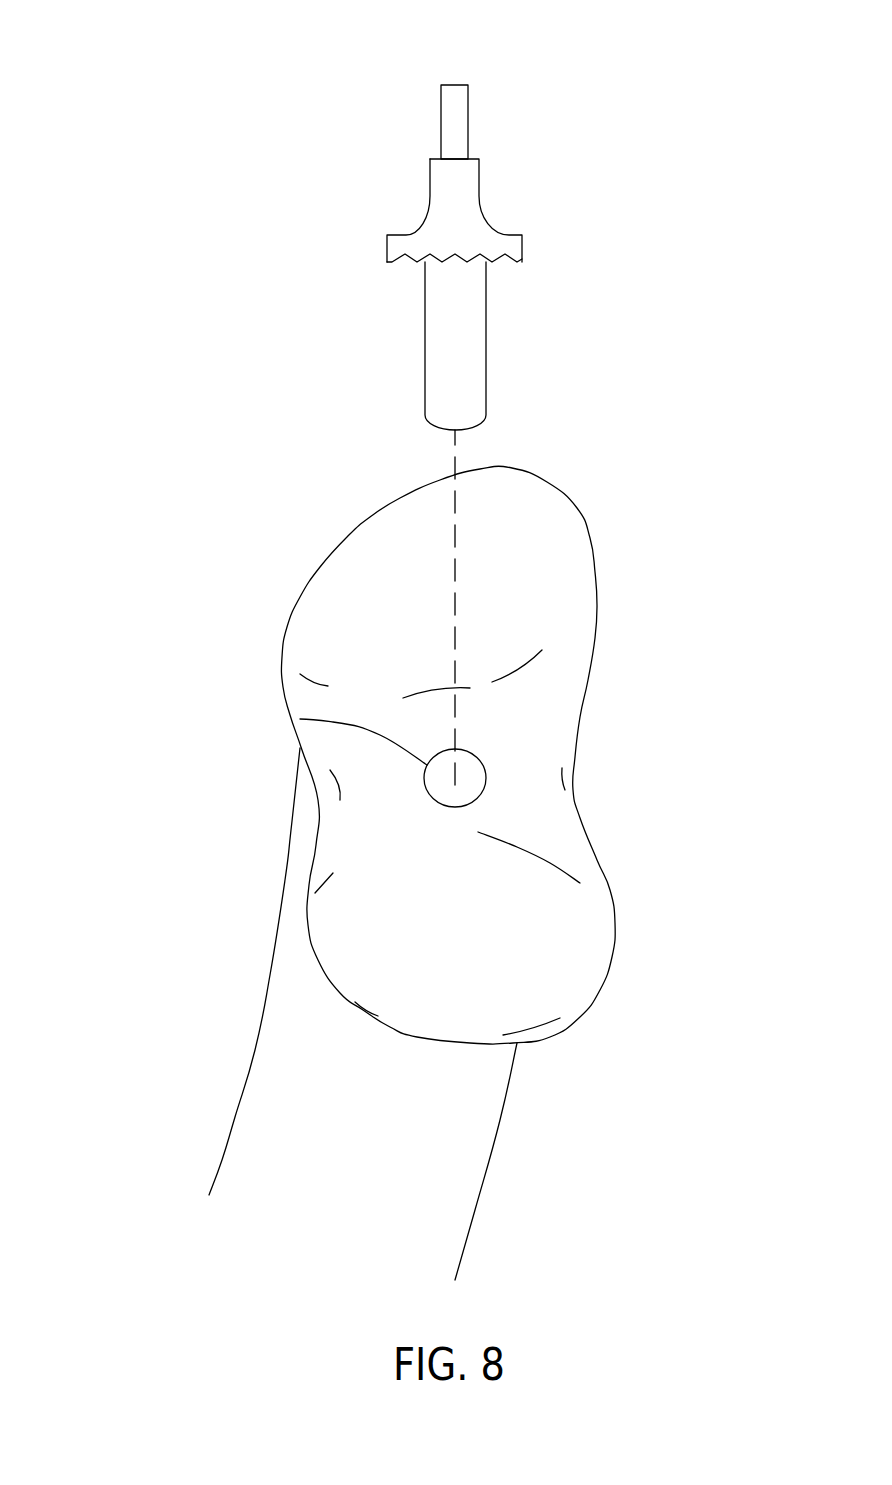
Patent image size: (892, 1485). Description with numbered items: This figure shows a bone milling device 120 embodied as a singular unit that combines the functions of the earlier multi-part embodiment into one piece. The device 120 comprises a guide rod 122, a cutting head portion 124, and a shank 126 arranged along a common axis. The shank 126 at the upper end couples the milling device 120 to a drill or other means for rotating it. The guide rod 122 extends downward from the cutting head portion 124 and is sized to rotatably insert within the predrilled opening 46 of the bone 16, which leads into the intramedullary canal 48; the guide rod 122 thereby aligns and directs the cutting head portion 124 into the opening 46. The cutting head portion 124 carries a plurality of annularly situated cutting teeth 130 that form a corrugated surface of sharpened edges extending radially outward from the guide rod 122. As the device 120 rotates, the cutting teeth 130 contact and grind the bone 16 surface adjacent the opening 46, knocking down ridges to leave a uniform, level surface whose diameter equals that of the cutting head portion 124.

The bone milling device 120 is at (237, 78).
The shank 126 is at (460, 103).
The cutting head portion 124 is at (412, 230).
The cutting teeth 130 is at (510, 263).
The guide rod 122 is at (475, 352).
The bone 16 is at (250, 1057).
The opening 46 is at (300, 719).
The intramedullary canal 48 is at (462, 785).